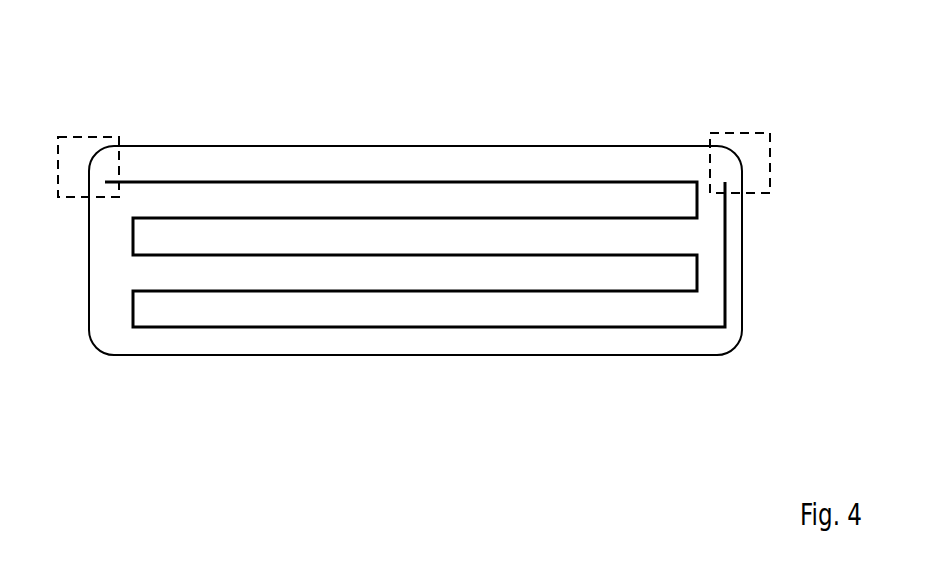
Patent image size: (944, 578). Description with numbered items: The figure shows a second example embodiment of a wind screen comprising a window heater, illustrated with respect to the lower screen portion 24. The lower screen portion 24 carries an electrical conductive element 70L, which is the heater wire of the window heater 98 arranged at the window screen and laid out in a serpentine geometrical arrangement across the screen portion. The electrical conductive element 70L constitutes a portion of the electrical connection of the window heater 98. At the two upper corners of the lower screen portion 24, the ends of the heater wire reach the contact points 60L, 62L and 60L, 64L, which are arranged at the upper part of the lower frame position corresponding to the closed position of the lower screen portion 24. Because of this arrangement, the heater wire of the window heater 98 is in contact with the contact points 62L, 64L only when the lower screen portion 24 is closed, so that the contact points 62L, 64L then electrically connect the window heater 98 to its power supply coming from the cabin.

The lower screen portion 24 is at (118, 290).
The window heater 98 is at (415, 202).
The electrical conductive element 70L is at (400, 180).
The contact point 60L is at (428, 112).
The contact point 62L is at (95, 132).
The contact point 64L is at (748, 132).